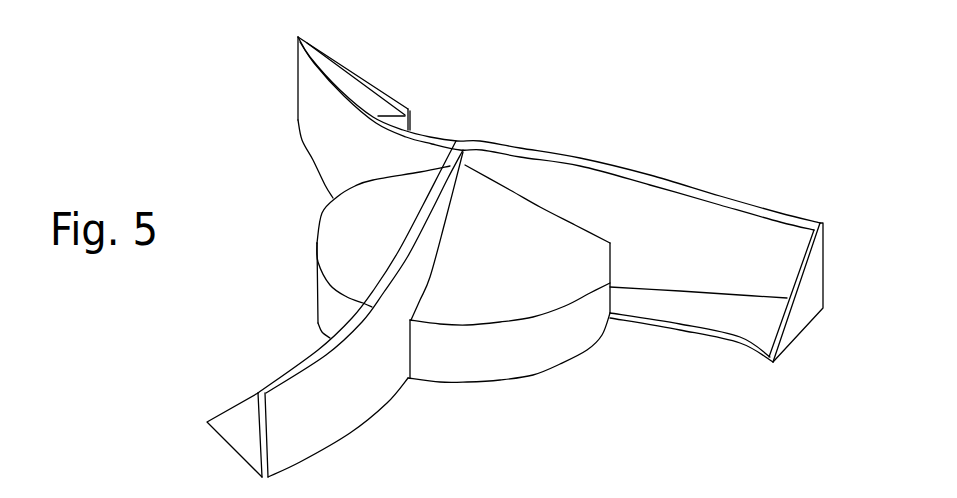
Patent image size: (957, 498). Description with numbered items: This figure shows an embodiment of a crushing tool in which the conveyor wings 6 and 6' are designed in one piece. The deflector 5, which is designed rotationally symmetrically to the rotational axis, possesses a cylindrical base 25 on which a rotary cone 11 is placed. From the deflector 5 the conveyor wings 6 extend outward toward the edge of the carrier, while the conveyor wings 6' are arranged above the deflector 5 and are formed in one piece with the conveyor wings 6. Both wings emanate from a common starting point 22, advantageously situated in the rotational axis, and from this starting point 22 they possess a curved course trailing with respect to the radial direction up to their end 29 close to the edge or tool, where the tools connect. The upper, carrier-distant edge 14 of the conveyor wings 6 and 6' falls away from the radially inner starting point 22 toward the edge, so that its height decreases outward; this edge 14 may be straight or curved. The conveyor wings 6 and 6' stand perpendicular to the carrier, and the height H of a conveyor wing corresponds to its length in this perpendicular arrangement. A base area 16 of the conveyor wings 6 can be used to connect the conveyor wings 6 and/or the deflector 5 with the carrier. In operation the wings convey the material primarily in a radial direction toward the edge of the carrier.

The deflector 5 is at (582, 378).
The conveyor wings 6 is at (585, 214).
The conveyor wings 6' is at (443, 117).
The rotary cone 11 is at (352, 245).
The upper edge 14 is at (608, 173).
The base area 16 is at (740, 317).
The starting point 22 is at (460, 138).
The cylindrical base 25 is at (462, 352).
The end 29 is at (808, 298).
The height H is at (668, 202).